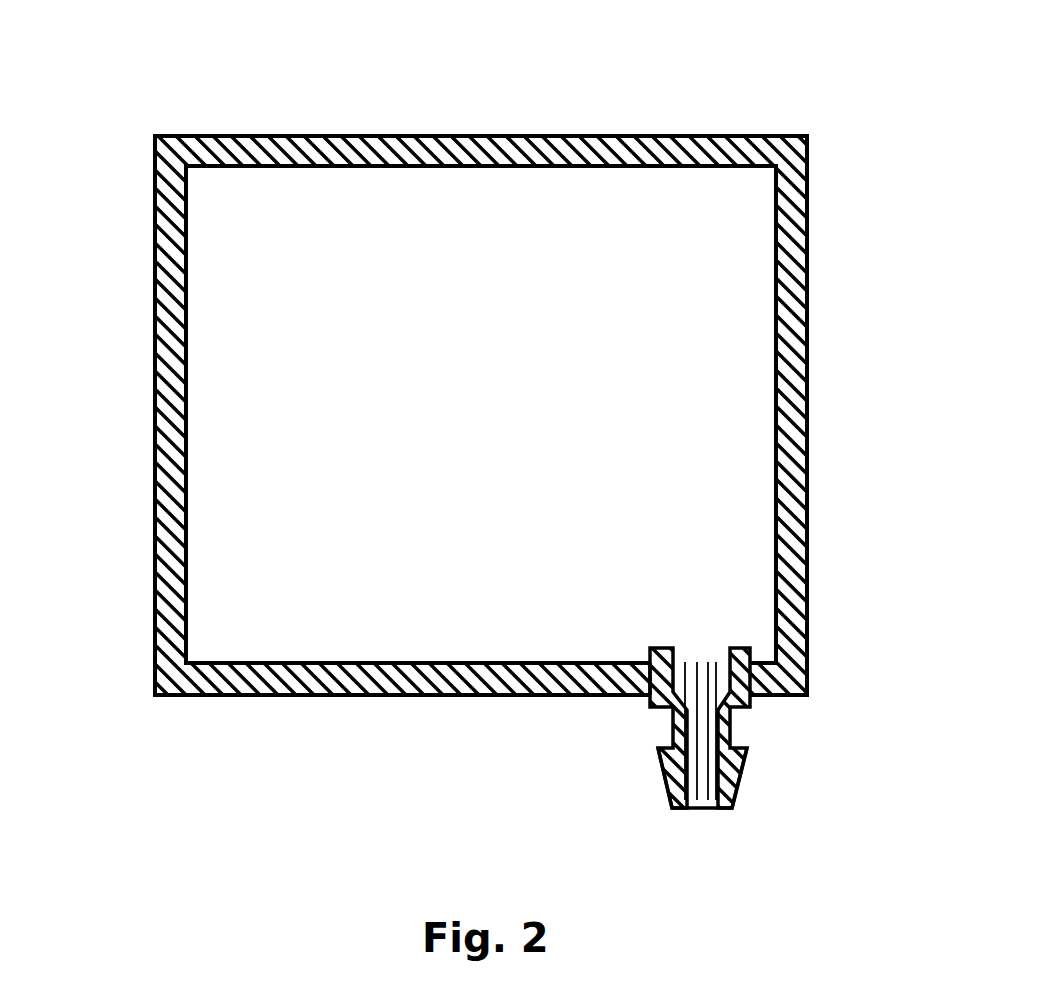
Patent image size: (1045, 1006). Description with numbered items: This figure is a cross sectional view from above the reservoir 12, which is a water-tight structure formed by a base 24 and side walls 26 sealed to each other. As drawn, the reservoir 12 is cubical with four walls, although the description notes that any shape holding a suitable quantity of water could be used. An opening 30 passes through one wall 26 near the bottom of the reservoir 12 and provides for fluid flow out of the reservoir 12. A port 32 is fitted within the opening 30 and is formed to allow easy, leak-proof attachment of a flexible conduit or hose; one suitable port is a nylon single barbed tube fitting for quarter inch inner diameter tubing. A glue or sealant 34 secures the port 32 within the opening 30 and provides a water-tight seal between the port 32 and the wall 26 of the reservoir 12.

The reservoir 12 is at (522, 434).
The base 24 is at (474, 423).
The side wall 26 is at (482, 140).
The opening 30 is at (750, 700).
The port 32 is at (740, 793).
The sealant 34 is at (650, 677).